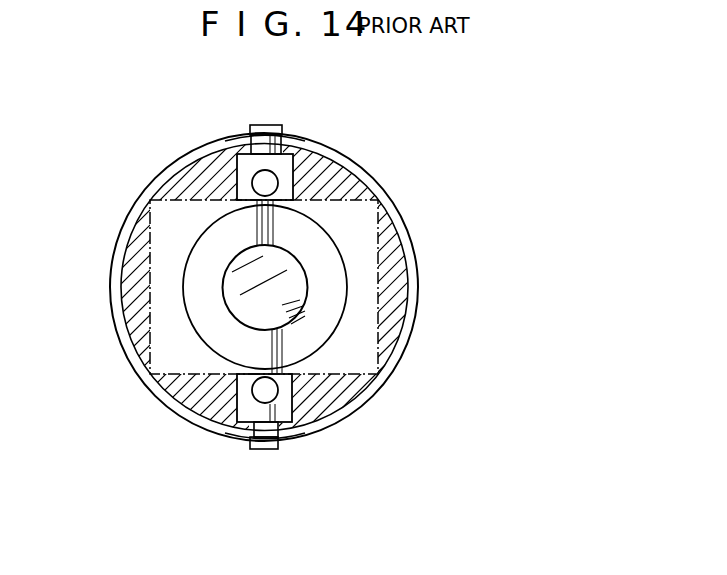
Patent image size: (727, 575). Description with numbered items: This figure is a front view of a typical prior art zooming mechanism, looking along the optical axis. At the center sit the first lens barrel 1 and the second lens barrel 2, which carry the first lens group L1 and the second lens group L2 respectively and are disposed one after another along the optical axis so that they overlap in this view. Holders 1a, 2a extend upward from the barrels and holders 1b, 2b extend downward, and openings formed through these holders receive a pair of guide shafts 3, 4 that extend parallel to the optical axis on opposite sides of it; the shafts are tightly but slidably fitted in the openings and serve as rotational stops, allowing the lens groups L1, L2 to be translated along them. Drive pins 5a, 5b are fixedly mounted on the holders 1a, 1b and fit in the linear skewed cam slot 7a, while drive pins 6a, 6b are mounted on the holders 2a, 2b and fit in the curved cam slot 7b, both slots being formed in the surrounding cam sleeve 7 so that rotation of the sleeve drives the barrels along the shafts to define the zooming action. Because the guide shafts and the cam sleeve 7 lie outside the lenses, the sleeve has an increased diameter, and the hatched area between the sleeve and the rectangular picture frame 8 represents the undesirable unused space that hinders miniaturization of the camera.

The first lens barrel 1 is at (317, 243).
The second lens barrel 2 is at (264, 287).
The holder 1a is at (283, 163).
The holder 2a is at (312, 150).
The holder 1b is at (287, 393).
The holder 2b is at (326, 413).
The guide shaft 3 is at (270, 181).
The guide shaft 4 is at (245, 392).
The drive pin 5a is at (264, 125).
The drive pin 6a is at (277, 106).
The drive pin 5b is at (255, 449).
The drive pin 6b is at (231, 462).
The cam sleeve 7 is at (378, 188).
The cam slot 7a is at (250, 140).
The cam slot 7b is at (286, 283).
The picture frame 8 is at (378, 253).
The first lens group L1 is at (235, 285).
The second lens group L2 is at (173, 287).